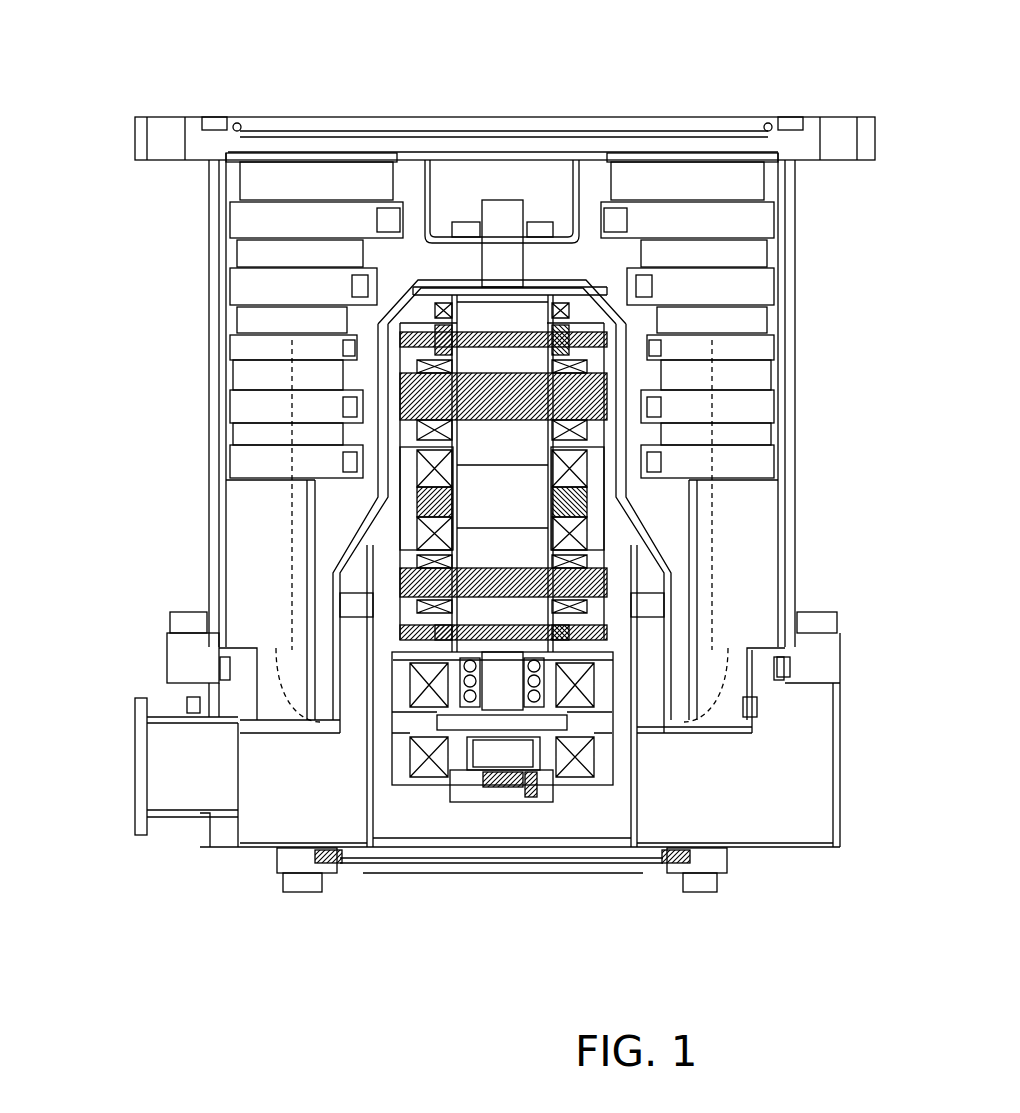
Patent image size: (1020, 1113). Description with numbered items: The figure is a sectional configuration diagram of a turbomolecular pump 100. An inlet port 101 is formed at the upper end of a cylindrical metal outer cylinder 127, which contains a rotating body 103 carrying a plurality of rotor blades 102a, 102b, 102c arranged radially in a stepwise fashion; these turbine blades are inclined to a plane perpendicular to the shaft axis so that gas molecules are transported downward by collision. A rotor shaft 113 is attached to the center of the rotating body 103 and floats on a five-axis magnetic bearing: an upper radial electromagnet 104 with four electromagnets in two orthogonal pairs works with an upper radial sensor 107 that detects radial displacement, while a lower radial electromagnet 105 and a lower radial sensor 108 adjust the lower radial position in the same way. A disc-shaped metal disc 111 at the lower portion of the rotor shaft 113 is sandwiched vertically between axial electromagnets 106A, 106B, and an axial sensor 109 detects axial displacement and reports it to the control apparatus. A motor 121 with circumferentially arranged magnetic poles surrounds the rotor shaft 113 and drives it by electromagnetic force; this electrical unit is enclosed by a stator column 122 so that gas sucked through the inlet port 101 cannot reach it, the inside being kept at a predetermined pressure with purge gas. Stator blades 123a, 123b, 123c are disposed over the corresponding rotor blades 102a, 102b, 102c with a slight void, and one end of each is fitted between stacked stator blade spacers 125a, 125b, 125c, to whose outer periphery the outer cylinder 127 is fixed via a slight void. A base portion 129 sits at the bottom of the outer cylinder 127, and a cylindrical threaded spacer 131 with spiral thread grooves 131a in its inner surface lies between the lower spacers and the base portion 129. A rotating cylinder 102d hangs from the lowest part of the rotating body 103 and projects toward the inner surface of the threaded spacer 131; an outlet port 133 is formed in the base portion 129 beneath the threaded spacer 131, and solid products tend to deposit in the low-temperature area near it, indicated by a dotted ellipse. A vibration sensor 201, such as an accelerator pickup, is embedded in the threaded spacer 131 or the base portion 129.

The turbomolecular pump 100 is at (540, 32).
The inlet port 101 is at (556, 130).
The rotating body 103 is at (443, 190).
The stator blade spacer 125a is at (236, 176).
The rotor blade 102a is at (236, 205).
The stator blade 123a is at (236, 235).
The stator blade spacer 125b is at (236, 265).
The rotor blade 102b is at (236, 295).
The stator blade 123b is at (236, 325).
The stator blade spacer 125c is at (236, 355).
The rotor blade 102c is at (236, 388).
The stator blade 123c is at (236, 420).
The spiral thread groove 131a is at (297, 518).
The rotating cylinder 102d is at (327, 555).
The threaded spacer 131 is at (247, 594).
The metal disc 111 is at (440, 725).
The outlet port 133 is at (165, 812).
The outer cylinder 127 is at (790, 262).
The upper radial sensor 107 is at (600, 325).
The rotor shaft 113 is at (548, 352).
The upper radial electromagnet 104 is at (622, 380).
The motor 121 is at (612, 493).
The stator column 122 is at (615, 530).
The lower radial electromagnet 105 is at (612, 568).
The lower radial sensor 108 is at (605, 632).
The vibration sensor 201 is at (760, 707).
The axial electromagnet 106A is at (597, 683).
The axial electromagnet 106B is at (597, 757).
The axial sensor 109 is at (495, 790).
The base portion 129 is at (760, 852).